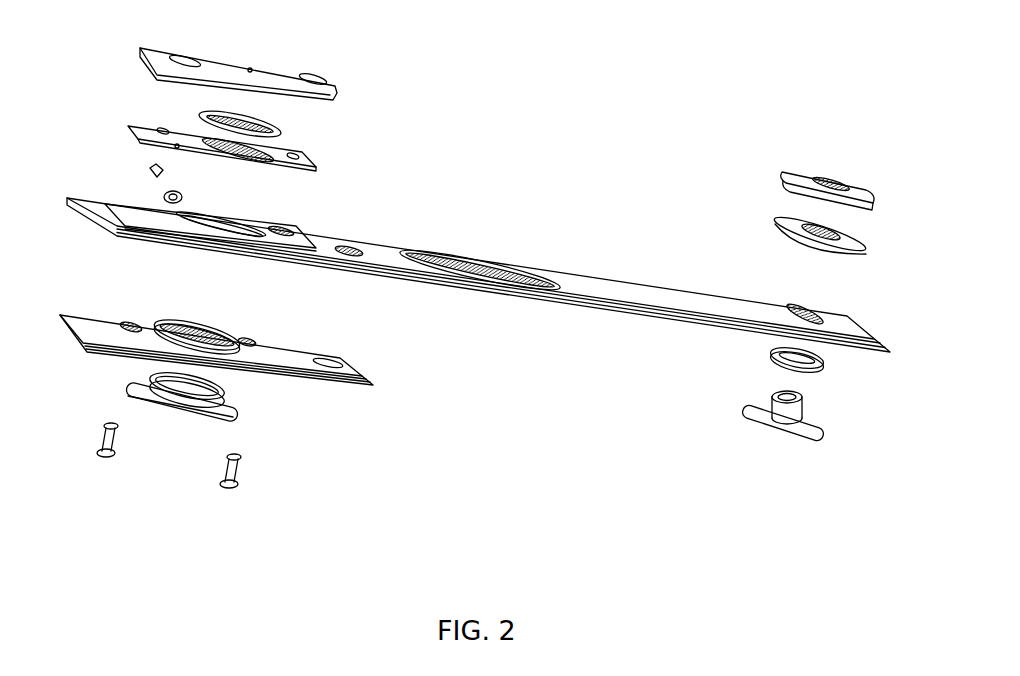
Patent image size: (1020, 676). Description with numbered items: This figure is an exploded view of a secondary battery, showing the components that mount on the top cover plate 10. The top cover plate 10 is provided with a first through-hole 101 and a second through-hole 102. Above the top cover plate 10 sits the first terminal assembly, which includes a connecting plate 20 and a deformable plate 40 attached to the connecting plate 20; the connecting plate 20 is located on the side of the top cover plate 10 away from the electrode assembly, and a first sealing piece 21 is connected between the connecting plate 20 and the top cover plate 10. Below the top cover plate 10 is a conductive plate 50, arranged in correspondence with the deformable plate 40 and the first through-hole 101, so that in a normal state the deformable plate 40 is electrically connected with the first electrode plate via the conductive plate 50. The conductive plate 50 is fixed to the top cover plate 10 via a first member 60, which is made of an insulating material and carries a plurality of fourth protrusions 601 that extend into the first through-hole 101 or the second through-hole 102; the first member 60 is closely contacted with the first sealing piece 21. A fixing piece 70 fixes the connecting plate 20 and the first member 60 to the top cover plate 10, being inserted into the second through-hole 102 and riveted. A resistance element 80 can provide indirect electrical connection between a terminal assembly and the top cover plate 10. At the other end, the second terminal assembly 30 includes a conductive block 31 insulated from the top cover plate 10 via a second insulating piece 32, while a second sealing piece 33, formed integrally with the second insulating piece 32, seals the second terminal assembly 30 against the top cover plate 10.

The top cover plate 10 is at (593, 282).
The first through-hole 101 is at (228, 222).
The second through-hole 102 is at (287, 232).
The connecting plate 20 is at (323, 84).
The first sealing piece 21 is at (293, 150).
The deformable plate 40 is at (203, 120).
The resistance element 80 is at (163, 195).
The first member 60 is at (98, 333).
The fourth protrusion 601 is at (243, 342).
The conductive plate 50 is at (227, 410).
The fixing piece 70 is at (237, 472).
The conductive block 31 is at (857, 195).
The second insulating piece 32 is at (773, 226).
The second sealing piece 33 is at (777, 353).
The second terminal assembly 30 is at (777, 423).